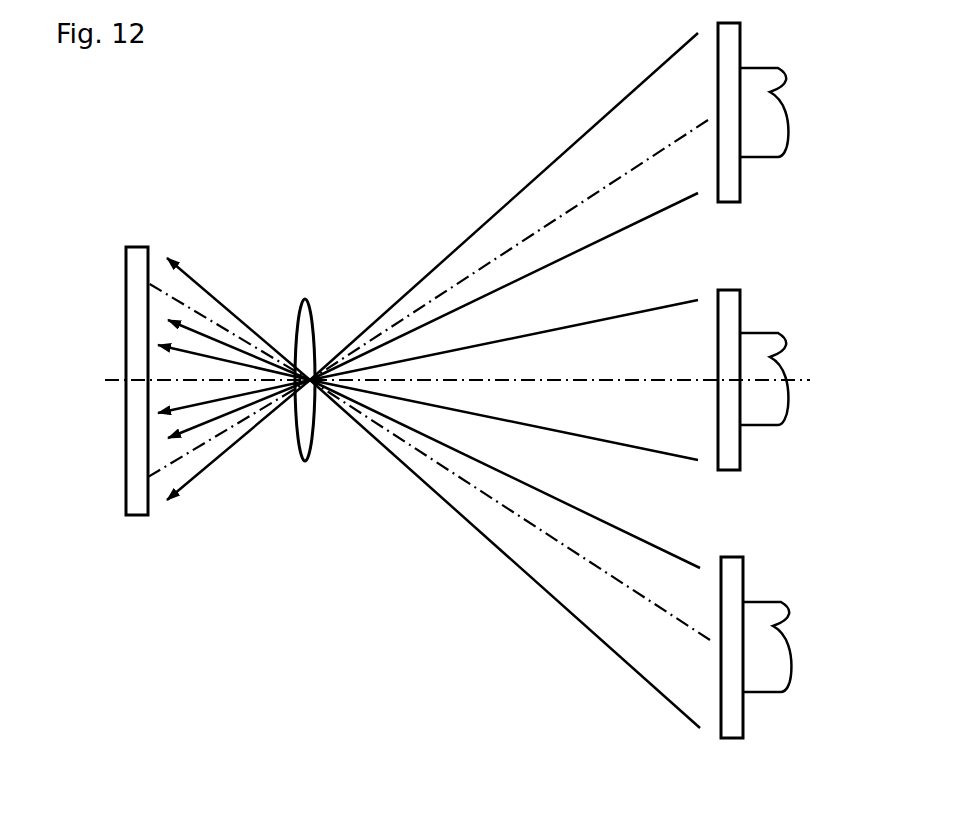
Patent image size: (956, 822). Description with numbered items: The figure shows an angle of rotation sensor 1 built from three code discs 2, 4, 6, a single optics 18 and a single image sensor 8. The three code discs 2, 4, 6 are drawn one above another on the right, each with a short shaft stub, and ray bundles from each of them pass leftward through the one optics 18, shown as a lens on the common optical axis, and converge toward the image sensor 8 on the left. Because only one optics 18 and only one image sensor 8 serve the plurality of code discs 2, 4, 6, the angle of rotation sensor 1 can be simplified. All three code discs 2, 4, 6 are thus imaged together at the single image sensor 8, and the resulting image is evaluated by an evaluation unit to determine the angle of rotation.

The angle of rotation sensor 1 is at (425, 115).
The code disc 2 is at (735, 155).
The code disc 4 is at (735, 450).
The code disc 6 is at (733, 730).
The image sensor 8 is at (137, 507).
The optics 18 is at (308, 420).